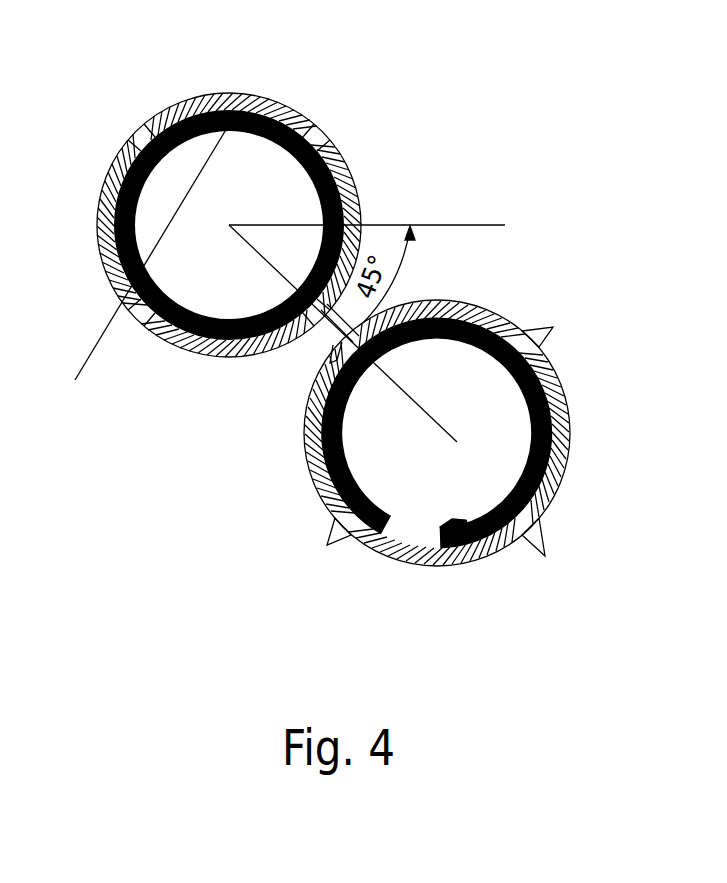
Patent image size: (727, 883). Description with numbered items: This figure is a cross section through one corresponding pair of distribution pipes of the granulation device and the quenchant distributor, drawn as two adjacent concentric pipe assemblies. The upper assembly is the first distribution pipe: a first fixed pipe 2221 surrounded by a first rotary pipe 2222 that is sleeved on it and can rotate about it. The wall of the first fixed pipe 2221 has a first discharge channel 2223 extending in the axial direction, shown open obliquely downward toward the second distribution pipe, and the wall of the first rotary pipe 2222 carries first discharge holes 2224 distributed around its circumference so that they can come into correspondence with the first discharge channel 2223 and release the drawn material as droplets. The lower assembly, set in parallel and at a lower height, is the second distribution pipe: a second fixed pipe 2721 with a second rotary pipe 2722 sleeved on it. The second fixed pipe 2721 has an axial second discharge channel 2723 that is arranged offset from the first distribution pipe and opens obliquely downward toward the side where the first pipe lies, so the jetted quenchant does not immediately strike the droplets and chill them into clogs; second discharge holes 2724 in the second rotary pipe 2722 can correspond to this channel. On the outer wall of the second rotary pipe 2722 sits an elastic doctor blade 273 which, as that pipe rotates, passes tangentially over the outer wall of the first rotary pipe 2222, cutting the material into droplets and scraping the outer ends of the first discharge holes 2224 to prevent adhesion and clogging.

The first fixed pipe 2221 is at (188, 273).
The first rotary pipe 2222 is at (232, 360).
The first discharge channel 2223 is at (289, 351).
The first discharge hole 2224 is at (136, 125).
The second fixed pipe 2721 is at (362, 500).
The second rotary pipe 2722 is at (438, 563).
The second discharge channel 2723 is at (418, 528).
The second discharge hole 2724 is at (540, 333).
The doctor blade 273 is at (323, 538).